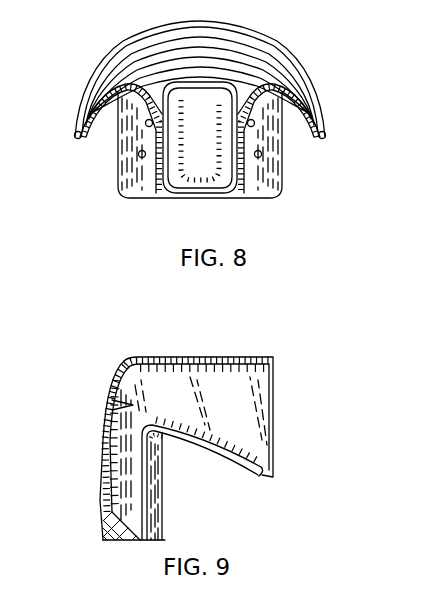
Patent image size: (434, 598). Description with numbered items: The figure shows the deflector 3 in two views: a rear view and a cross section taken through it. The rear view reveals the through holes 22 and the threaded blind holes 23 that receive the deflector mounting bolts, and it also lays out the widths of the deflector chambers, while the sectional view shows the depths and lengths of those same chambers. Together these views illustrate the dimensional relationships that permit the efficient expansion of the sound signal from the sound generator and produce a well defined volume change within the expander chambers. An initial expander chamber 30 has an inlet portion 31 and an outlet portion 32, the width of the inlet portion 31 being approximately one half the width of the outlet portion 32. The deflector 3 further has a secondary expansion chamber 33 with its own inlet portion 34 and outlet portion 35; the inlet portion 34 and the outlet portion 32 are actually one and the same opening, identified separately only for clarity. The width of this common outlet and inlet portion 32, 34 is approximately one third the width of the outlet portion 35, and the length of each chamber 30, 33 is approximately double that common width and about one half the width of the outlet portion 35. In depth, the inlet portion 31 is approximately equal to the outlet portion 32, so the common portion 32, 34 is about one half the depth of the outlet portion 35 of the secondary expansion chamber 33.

In FIG. 8, the deflector 3 is at (98, 58).
In FIG. 9, the deflector 3 is at (102, 480).
In FIG. 8, the through holes 22 is at (254, 125).
In FIG. 8, the threaded blind holes 23 is at (261, 156).
In FIG. 8, the initial expander chamber 30 is at (198, 146).
In FIG. 9, the initial expander chamber 30 is at (123, 455).
In FIG. 8, the inlet portion 31 is at (207, 167).
In FIG. 9, the inlet portion 31 is at (112, 507).
In FIG. 8, the outlet portion 32 is at (240, 72).
In FIG. 9, the outlet portion 32 is at (128, 407).
In FIG. 8, the secondary expansion chamber 33 is at (217, 52).
In FIG. 9, the secondary expansion chamber 33 is at (230, 382).
In FIG. 8, the inlet portion 34 is at (222, 78).
In FIG. 9, the inlet portion 34 is at (130, 403).
In FIG. 8, the outlet portion 35 is at (315, 117).
In FIG. 9, the outlet portion 35 is at (257, 477).